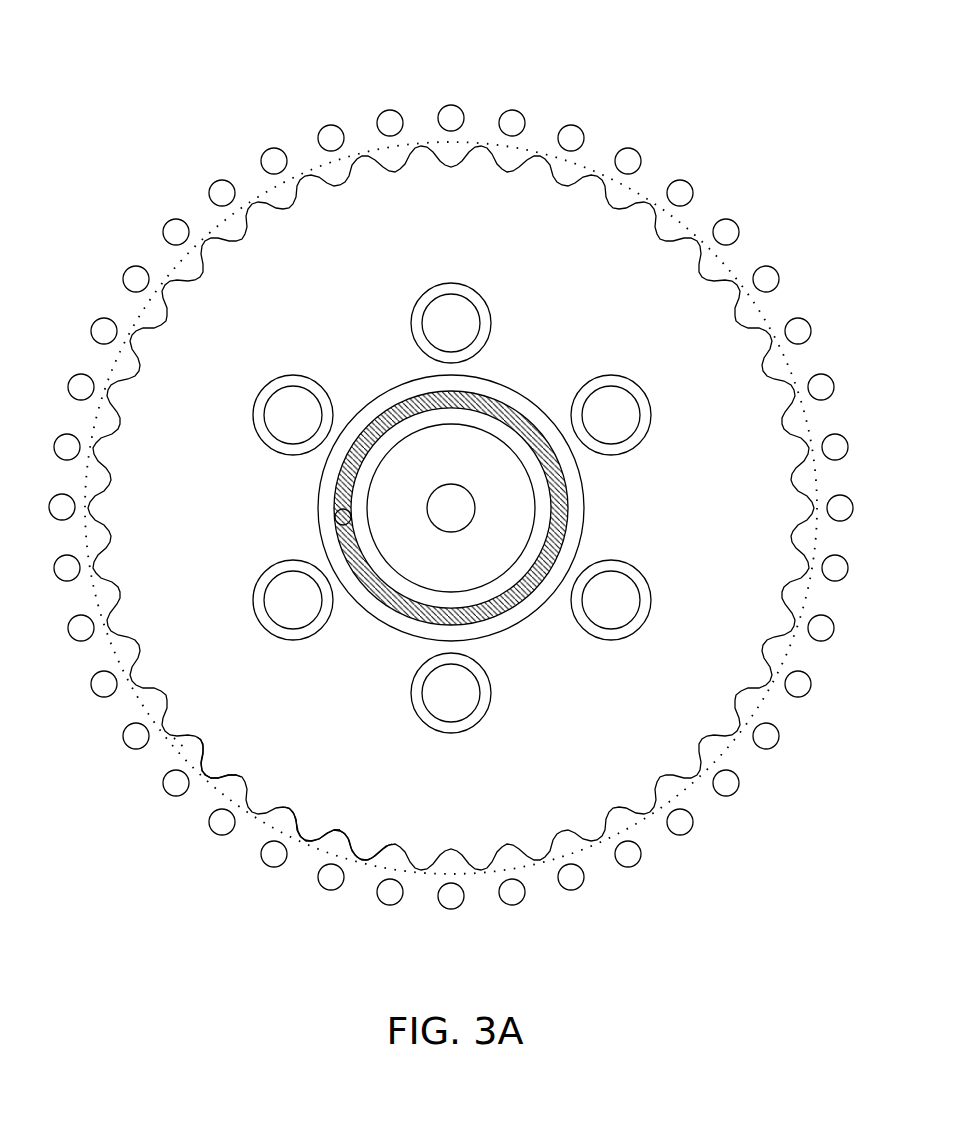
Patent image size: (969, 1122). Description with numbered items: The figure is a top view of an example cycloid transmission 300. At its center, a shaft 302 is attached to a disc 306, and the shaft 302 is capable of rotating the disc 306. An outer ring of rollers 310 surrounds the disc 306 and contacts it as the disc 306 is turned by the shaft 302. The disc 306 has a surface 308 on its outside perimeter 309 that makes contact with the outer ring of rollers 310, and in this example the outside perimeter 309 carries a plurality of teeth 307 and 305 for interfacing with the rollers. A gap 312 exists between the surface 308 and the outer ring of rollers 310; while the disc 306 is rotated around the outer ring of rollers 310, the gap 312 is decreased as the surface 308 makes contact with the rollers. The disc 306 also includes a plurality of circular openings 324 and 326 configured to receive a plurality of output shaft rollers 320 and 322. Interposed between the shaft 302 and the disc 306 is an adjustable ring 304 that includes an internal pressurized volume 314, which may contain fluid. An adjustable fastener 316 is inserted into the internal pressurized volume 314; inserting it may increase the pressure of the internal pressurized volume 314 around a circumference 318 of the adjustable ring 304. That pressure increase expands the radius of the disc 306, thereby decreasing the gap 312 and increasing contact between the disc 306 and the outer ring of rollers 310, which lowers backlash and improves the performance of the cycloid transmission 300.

The cycloid transmission 300 is at (215, 100).
The shaft 302 is at (455, 512).
The adjustable ring 304 is at (380, 610).
The teeth 305 is at (363, 847).
The disc 306 is at (638, 257).
The teeth 307 is at (303, 837).
The surface 308 is at (203, 777).
The outside perimeter 309 is at (168, 740).
The outer ring of rollers 310 is at (448, 118).
The gap 312 is at (470, 137).
The internal pressurized volume 314 is at (515, 617).
The adjustable fastener 316 is at (345, 517).
The circumference 318 is at (320, 523).
The output shaft rollers 320 is at (290, 413).
The output shaft rollers 322 is at (452, 322).
The circular openings 324 is at (313, 378).
The circular openings 326 is at (473, 288).